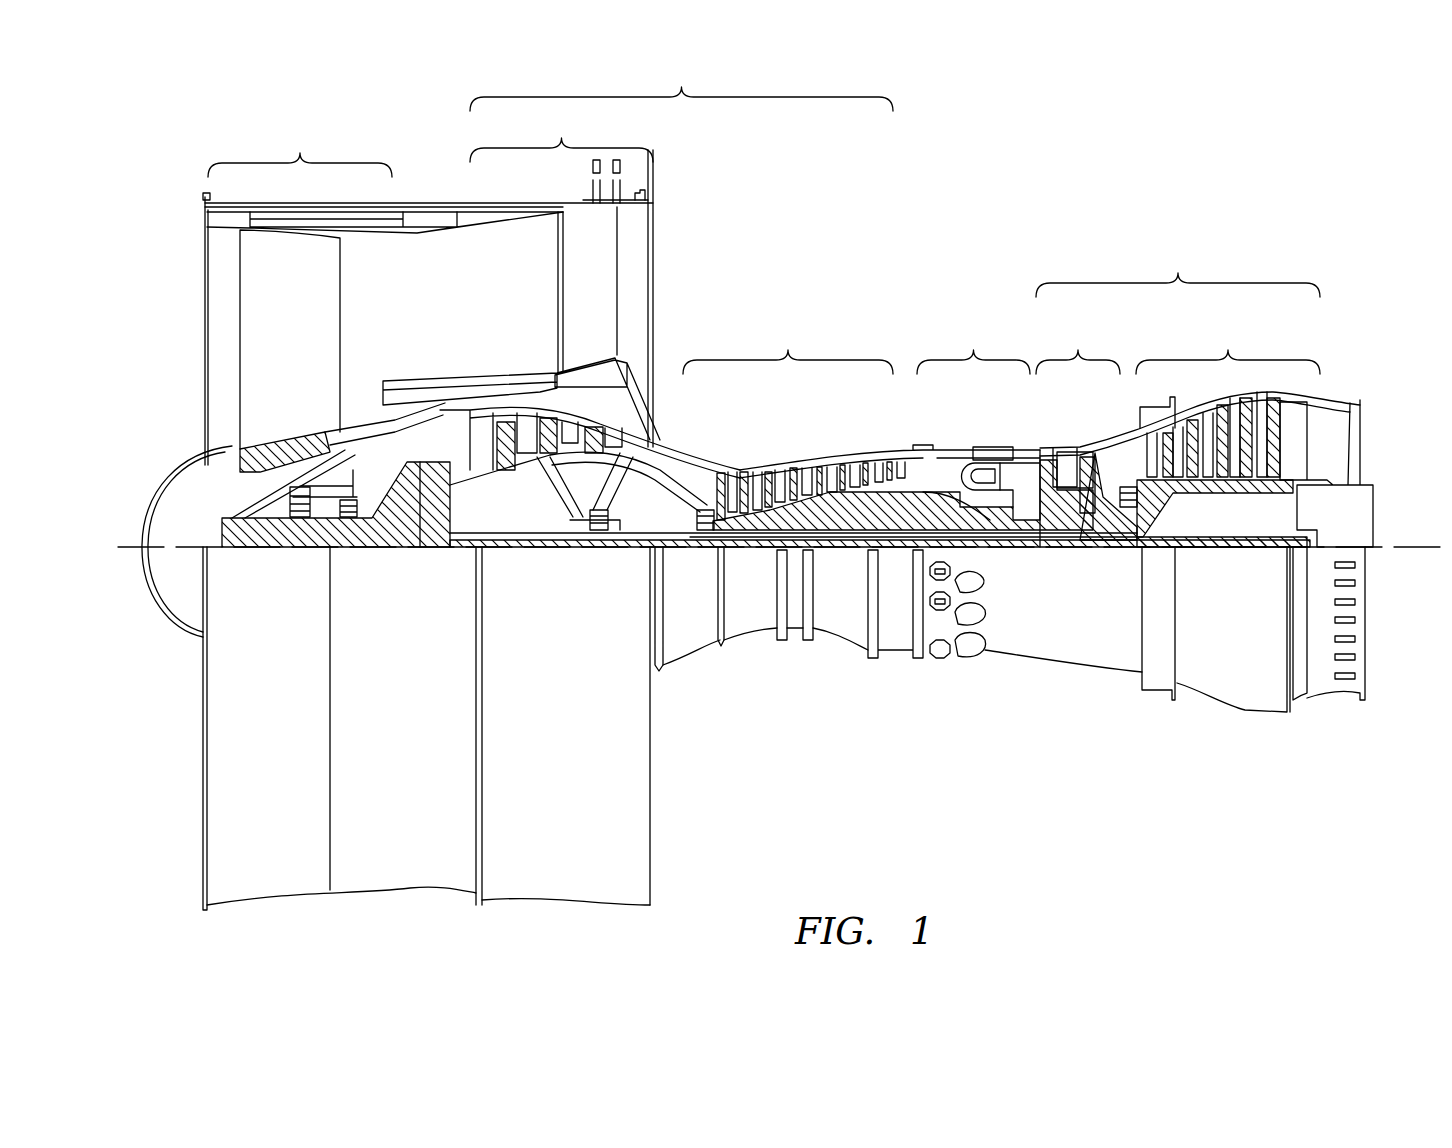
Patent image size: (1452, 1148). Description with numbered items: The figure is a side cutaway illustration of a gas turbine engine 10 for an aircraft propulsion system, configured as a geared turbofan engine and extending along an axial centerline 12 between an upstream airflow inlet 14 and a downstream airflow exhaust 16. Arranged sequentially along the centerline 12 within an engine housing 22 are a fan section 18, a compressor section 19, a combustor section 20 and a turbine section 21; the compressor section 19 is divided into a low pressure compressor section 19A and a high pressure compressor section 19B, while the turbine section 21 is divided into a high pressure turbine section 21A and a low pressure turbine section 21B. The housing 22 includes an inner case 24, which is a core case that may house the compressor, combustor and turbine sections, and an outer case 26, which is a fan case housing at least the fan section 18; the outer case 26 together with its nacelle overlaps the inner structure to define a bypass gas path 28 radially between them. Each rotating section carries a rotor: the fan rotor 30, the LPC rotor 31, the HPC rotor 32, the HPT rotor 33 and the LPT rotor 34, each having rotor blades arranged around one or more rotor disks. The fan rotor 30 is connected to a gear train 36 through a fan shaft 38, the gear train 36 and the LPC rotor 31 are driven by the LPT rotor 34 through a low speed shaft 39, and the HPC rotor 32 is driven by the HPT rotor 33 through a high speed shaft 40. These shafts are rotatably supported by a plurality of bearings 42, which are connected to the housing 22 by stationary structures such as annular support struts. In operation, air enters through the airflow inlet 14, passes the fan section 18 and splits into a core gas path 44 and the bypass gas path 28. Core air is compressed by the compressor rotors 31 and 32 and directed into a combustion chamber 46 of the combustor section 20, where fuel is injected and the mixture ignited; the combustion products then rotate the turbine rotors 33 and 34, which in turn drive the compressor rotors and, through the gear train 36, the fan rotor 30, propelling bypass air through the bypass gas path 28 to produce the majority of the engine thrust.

The gas turbine engine 10 is at (170, 182).
The axial centerline 12 is at (1442, 546).
The airflow inlet 14 is at (204, 284).
The airflow exhaust 16 is at (1365, 428).
The fan section 18 is at (300, 283).
The compressor section 19 is at (681, 83).
The low pressure compressor (LPC) section 19A is at (590, 294).
The high pressure compressor (HPC) section 19B is at (861, 417).
The combustor section 20 is at (1005, 432).
The turbine section 21 is at (1198, 345).
The high pressure turbine (HPT) section 21A is at (1109, 397).
The low pressure turbine (LPT) section 21B is at (1228, 397).
The engine housing 22 is at (670, 665).
The inner case 24 is at (895, 652).
The outer case 26 is at (576, 905).
The bypass gas path 28 is at (482, 302).
The fan rotor 30 is at (216, 462).
The LPC rotor 31 is at (548, 490).
The HPC rotor 32 is at (838, 510).
The HPT rotor 33 is at (1068, 530).
The LPT rotor 34 is at (1227, 488).
The gear train 36 is at (428, 548).
The fan shaft 38 is at (277, 548).
The low speed shaft 39 is at (1240, 548).
The high speed shaft 40 is at (990, 530).
The bearings 42 is at (340, 520).
The core gas path 44 is at (676, 468).
The combustion chamber 46 is at (988, 468).